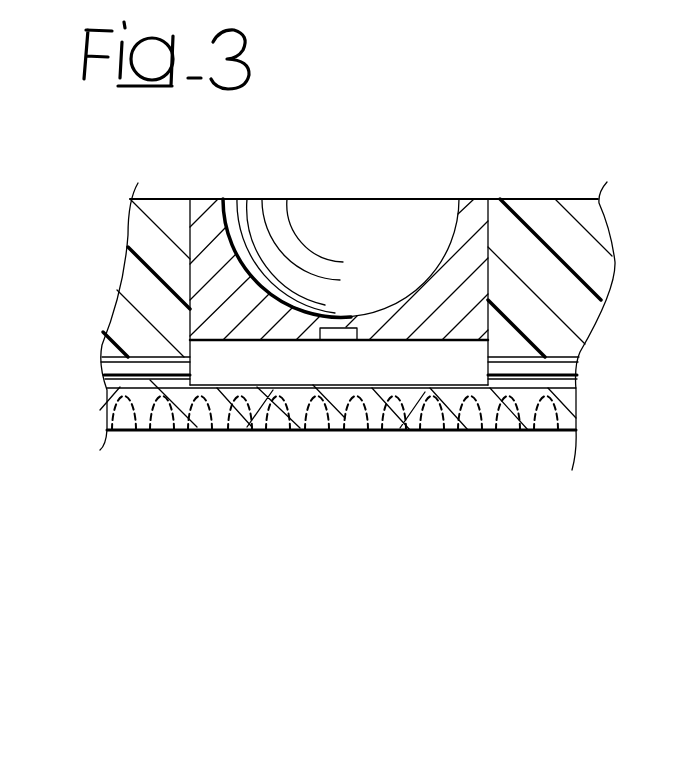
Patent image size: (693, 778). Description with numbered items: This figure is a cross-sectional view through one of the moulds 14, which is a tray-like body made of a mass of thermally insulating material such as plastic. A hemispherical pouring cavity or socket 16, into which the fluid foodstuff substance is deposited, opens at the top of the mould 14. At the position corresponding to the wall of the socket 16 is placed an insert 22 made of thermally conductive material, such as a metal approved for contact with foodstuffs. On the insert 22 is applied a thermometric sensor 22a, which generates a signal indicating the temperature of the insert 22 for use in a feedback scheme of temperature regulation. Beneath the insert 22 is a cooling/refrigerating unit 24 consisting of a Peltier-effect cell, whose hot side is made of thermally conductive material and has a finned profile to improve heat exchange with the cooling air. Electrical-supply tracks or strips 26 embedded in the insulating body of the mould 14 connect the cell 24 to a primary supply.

The mould 14 is at (581, 198).
The pouring cavity 16 is at (352, 185).
The insert 22 is at (205, 226).
The thermometric sensor 22a is at (332, 342).
The cooling/refrigerating unit 24 is at (430, 375).
The electrical-supply track 26 is at (146, 376).